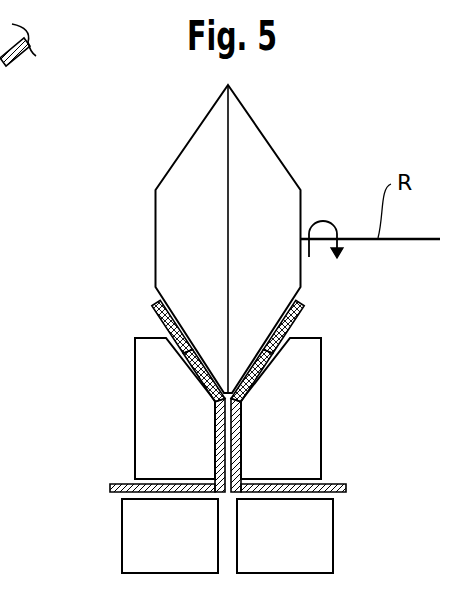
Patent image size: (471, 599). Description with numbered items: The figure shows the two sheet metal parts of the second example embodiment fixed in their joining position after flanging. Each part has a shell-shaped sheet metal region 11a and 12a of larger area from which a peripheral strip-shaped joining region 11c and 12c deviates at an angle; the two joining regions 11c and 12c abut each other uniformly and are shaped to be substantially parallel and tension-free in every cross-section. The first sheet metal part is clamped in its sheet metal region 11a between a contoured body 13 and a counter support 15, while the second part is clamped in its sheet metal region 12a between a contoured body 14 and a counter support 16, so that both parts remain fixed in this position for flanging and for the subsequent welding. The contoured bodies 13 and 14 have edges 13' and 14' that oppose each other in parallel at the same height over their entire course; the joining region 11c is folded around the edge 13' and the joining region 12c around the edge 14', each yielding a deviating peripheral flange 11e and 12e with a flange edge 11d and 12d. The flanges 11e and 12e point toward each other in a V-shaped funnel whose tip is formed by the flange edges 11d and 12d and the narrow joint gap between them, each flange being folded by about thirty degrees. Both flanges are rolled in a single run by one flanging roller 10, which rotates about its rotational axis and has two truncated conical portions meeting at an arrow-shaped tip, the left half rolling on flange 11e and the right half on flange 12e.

The flanging roller 10 is at (260, 150).
The sheet metal region 11a is at (110, 490).
The peripheral joining region 11c is at (215, 446).
The flange edge 11d is at (205, 397).
The peripheral flange 11e is at (155, 312).
The sheet metal region 12a is at (345, 490).
The peripheral joining region 12c is at (241, 446).
The flange edge 12d is at (250, 396).
The peripheral flange 12e is at (299, 316).
The contoured body 13 is at (135, 400).
The edge of contoured body 13' is at (146, 436).
The contoured body 14 is at (320, 399).
The edge of contoured body 14' is at (310, 436).
The counter support 15 is at (136, 536).
The counter support 16 is at (320, 540).